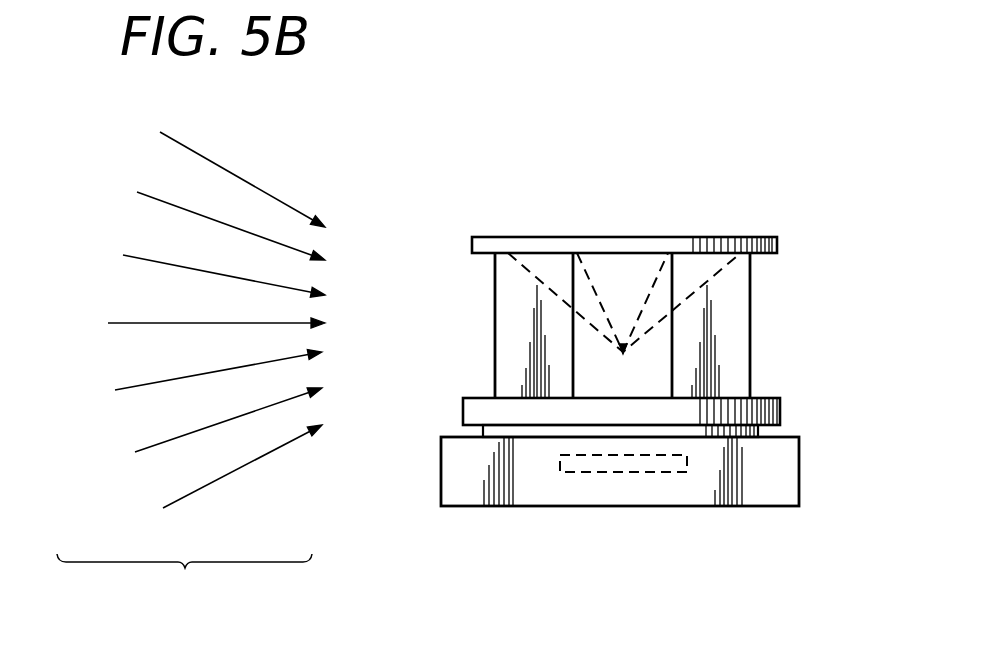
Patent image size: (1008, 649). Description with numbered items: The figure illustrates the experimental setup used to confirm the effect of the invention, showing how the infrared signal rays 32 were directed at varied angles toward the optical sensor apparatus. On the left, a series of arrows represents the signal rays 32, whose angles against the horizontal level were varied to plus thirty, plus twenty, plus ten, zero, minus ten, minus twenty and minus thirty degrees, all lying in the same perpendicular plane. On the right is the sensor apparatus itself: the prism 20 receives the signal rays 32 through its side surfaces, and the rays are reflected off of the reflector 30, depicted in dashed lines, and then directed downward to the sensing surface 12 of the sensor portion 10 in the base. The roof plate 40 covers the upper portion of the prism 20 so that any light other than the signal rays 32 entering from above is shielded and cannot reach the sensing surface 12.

The sensor portion 10 is at (808, 472).
The sensing surface 12 is at (650, 473).
The prism 20 is at (758, 333).
The reflector 30 is at (712, 283).
The roof plate 40 is at (735, 230).
The signal rays 32 is at (191, 355).